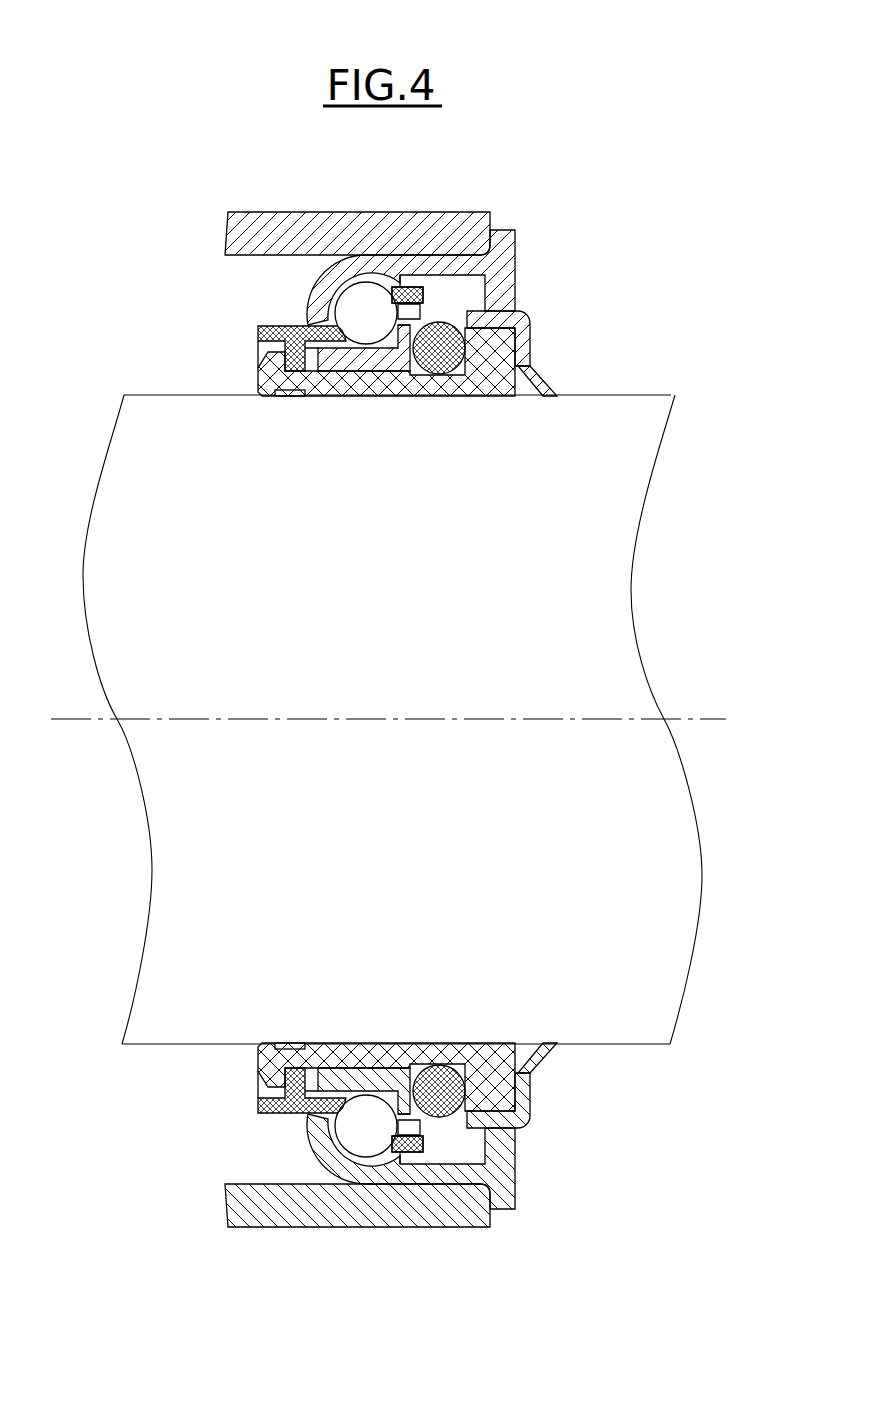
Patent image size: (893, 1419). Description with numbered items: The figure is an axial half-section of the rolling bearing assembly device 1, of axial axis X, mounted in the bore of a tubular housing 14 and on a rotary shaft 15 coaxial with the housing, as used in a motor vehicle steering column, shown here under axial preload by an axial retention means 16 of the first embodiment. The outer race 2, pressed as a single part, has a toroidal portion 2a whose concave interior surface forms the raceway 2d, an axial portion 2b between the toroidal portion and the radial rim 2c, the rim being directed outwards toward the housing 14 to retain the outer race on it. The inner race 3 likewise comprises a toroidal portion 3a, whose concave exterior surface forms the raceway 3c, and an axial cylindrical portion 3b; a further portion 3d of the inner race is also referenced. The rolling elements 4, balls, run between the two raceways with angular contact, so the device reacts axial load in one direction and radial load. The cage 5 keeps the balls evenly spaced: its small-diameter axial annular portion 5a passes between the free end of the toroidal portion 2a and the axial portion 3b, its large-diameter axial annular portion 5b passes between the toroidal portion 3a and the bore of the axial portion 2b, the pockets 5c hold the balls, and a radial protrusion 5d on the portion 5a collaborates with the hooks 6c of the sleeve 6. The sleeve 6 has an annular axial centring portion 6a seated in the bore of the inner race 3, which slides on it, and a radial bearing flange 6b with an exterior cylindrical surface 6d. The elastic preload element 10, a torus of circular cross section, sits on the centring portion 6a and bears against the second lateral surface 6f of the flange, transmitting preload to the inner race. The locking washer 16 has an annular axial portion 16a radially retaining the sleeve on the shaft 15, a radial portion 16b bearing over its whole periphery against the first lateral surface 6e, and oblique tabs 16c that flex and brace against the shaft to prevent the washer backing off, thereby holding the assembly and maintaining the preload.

The rolling bearing assembly device 1 is at (553, 219).
The outer race 2 is at (411, 246).
The toroidal portion 2a is at (319, 285).
The axial portion 2b is at (477, 262).
The radial rim 2c is at (504, 236).
The raceway 2d is at (352, 286).
The inner race 3 is at (424, 300).
The toroidal portion 3a is at (399, 373).
The axial cylindrical portion 3b is at (345, 378).
The raceway 3c is at (373, 375).
The inner ring end portion 3d is at (283, 393).
The rolling elements 4 is at (358, 326).
The cage 5 is at (284, 323).
The axial annular portion of small diameter 5a is at (330, 318).
The axial annular portion of large diameter 5b is at (425, 300).
The pockets 5c is at (393, 290).
The radial protrusion 5d is at (282, 352).
The sleeve 6 is at (516, 372).
The annular axial centring portion 6a is at (431, 385).
The radial bearing flange 6b is at (531, 348).
The hooks 6c is at (268, 373).
The exterior cylindrical surface 6d is at (528, 321).
The first lateral surface 6e is at (531, 1083).
The second lateral surface 6f is at (462, 1058).
The elastic preload element 10 is at (452, 368).
The tubular housing 14 is at (228, 240).
The rotary shaft 15 is at (85, 576).
The axial retention means 16 is at (524, 1131).
The annular axial portion 16a is at (529, 313).
The radial portion 16b is at (531, 1112).
The oblique tabs 16c is at (548, 390).
The axial axis X is at (399, 720).